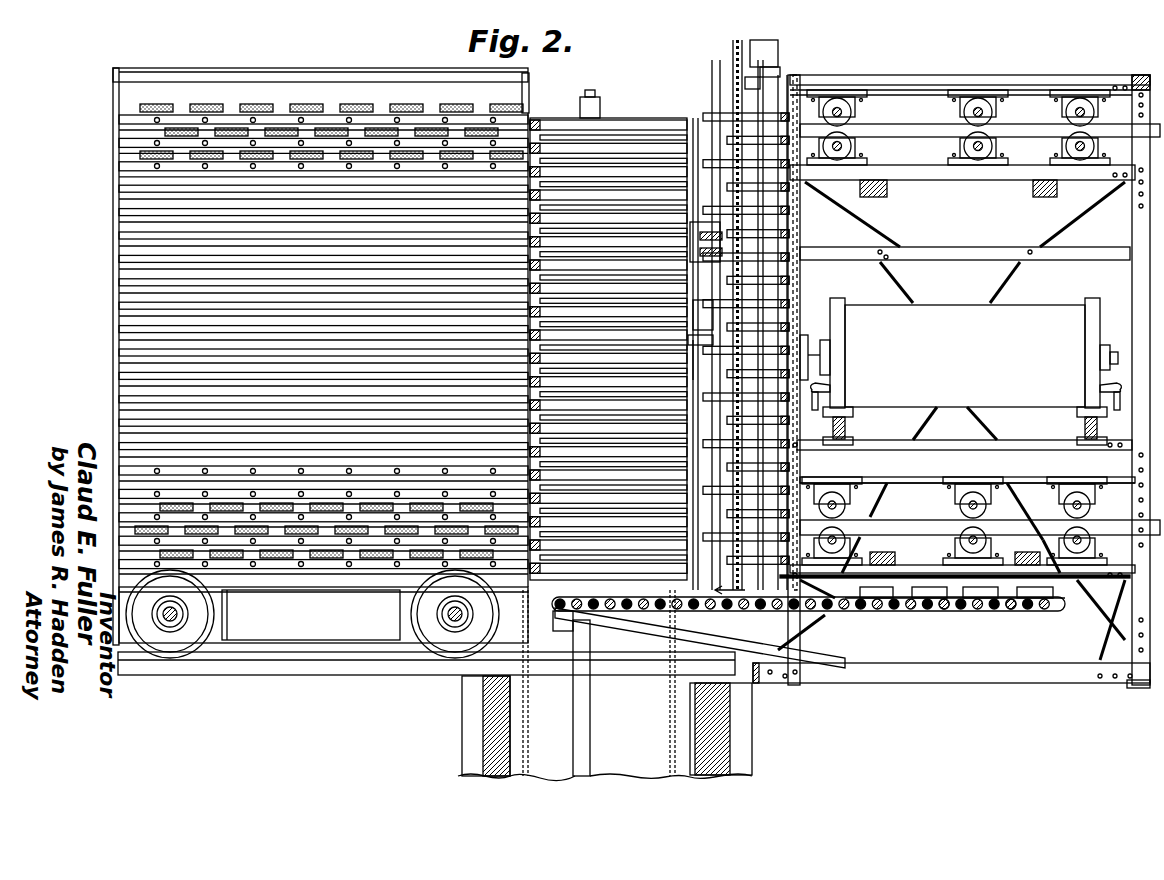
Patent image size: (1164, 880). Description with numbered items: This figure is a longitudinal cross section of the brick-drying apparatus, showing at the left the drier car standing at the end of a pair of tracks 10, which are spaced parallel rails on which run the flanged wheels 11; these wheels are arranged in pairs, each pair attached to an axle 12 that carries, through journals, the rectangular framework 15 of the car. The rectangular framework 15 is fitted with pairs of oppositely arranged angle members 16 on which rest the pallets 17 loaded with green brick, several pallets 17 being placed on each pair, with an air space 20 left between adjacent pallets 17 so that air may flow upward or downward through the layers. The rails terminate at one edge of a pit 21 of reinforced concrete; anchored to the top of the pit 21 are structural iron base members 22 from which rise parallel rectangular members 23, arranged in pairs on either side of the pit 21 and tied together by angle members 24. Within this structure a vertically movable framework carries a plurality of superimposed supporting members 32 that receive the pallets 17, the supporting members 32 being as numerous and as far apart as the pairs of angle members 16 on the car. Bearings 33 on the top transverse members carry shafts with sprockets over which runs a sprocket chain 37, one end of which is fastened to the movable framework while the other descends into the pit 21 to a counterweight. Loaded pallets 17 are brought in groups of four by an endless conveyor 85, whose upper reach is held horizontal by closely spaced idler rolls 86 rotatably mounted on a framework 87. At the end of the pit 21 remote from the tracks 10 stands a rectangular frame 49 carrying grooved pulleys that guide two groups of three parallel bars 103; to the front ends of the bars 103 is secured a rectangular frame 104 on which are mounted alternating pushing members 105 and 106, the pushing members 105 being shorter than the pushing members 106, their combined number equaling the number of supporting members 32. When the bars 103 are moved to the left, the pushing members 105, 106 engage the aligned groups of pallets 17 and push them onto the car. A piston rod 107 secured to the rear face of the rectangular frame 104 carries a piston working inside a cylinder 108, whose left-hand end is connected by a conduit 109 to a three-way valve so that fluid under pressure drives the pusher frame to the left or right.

The tracks 10 is at (290, 676).
The flanged wheels 11 is at (155, 640).
The axle 12 is at (176, 620).
The rectangular framework 15 is at (117, 155).
The angle members 16 is at (117, 181).
The pallets 17 is at (920, 612).
The air space 20 is at (322, 541).
The pit 21 is at (690, 757).
The structural iron base members 22 is at (607, 680).
The rectangular members 23 is at (722, 622).
The angle members 24 is at (712, 492).
The supporting members 32 is at (628, 145).
The bearings 33 is at (698, 230).
The sprocket chain 37 is at (512, 740).
The rectangular frame 49 is at (1135, 279).
The endless conveyor 85 is at (845, 663).
The idler rolls 86 is at (958, 612).
The framework 87 is at (1003, 612).
The bars 103 is at (1023, 128).
The rectangular frame 104 is at (795, 237).
The pushing members 105 is at (770, 100).
The pushing members 106 is at (708, 140).
The piston rod 107 is at (812, 340).
The cylinder 108 is at (965, 356).
The conduit 109 is at (830, 400).